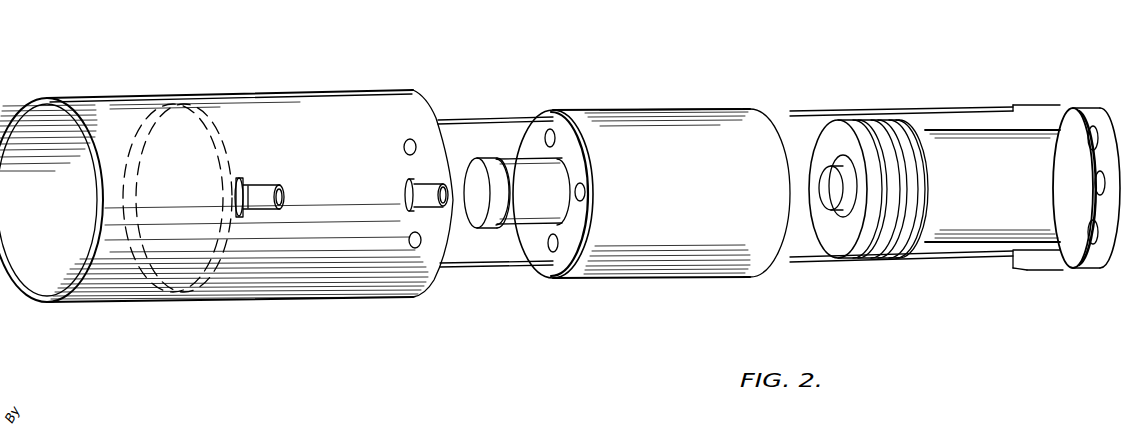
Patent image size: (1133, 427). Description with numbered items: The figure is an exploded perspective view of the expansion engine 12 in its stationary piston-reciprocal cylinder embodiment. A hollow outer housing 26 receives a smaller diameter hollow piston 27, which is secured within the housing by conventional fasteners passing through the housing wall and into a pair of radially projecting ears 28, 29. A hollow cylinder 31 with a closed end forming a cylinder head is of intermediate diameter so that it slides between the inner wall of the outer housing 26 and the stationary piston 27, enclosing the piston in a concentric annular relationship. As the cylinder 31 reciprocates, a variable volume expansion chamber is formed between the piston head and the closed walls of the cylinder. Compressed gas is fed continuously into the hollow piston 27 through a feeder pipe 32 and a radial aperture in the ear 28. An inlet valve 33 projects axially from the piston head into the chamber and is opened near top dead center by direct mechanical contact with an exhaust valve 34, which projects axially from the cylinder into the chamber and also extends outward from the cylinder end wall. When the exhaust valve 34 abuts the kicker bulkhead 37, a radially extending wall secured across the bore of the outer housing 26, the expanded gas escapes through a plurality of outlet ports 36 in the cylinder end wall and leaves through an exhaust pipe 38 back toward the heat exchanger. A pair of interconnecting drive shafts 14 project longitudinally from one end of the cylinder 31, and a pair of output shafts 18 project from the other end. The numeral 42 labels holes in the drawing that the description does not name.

The expansion engine 12 is at (612, 280).
The interconnecting drive shafts 14 is at (478, 117).
The output shafts 18 is at (800, 266).
The outer housing 26 is at (418, 89).
The hollow piston 27 is at (969, 249).
The radially projecting ear 28 is at (1078, 110).
The radially projecting ear 29 is at (992, 129).
The hollow cylinder 31 is at (724, 107).
The feeder pipe 32 is at (421, 193).
The inlet valve 33 is at (834, 226).
The exhaust valve 34 is at (508, 150).
The outlet ports 36 is at (558, 241).
The kicker bulkhead 37 is at (180, 277).
The exhaust pipe 38 is at (267, 208).
The holes 42 is at (417, 142).